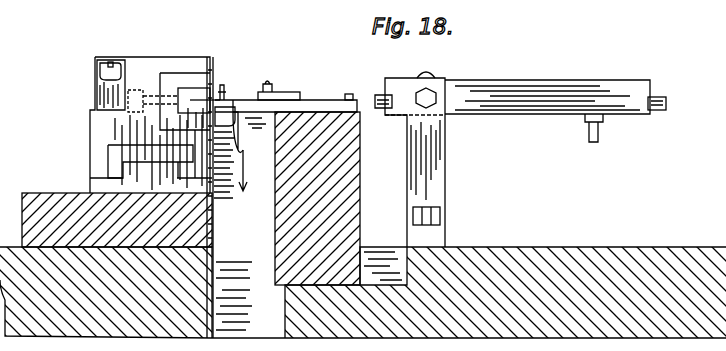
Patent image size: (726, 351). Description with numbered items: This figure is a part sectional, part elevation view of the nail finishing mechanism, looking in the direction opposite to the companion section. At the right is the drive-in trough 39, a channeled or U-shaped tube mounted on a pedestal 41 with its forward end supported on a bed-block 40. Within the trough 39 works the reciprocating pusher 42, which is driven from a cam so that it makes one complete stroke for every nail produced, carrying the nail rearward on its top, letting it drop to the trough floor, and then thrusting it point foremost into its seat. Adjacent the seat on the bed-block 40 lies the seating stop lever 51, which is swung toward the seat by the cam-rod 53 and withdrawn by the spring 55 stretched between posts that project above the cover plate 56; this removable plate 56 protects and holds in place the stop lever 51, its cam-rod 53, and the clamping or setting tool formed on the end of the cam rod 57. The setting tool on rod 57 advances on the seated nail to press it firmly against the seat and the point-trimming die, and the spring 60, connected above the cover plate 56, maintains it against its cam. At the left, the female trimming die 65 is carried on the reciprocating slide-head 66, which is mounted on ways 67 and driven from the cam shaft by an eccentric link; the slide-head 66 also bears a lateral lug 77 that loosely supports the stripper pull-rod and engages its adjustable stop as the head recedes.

The drive-in trough 39 is at (518, 88).
The bed-block 40 is at (345, 185).
The pedestal 41 is at (440, 200).
The pusher 42 is at (665, 108).
The stop lever 51 is at (318, 102).
The cam-rod 53 is at (272, 100).
The spring 55 is at (268, 84).
The cover plate 56 is at (290, 94).
The cam rod 57 is at (227, 197).
The spring 60 is at (220, 95).
The female trimming die 65 is at (188, 90).
The slide-head 66 is at (98, 128).
The ways 67 is at (102, 186).
The lateral lug 77 is at (105, 78).